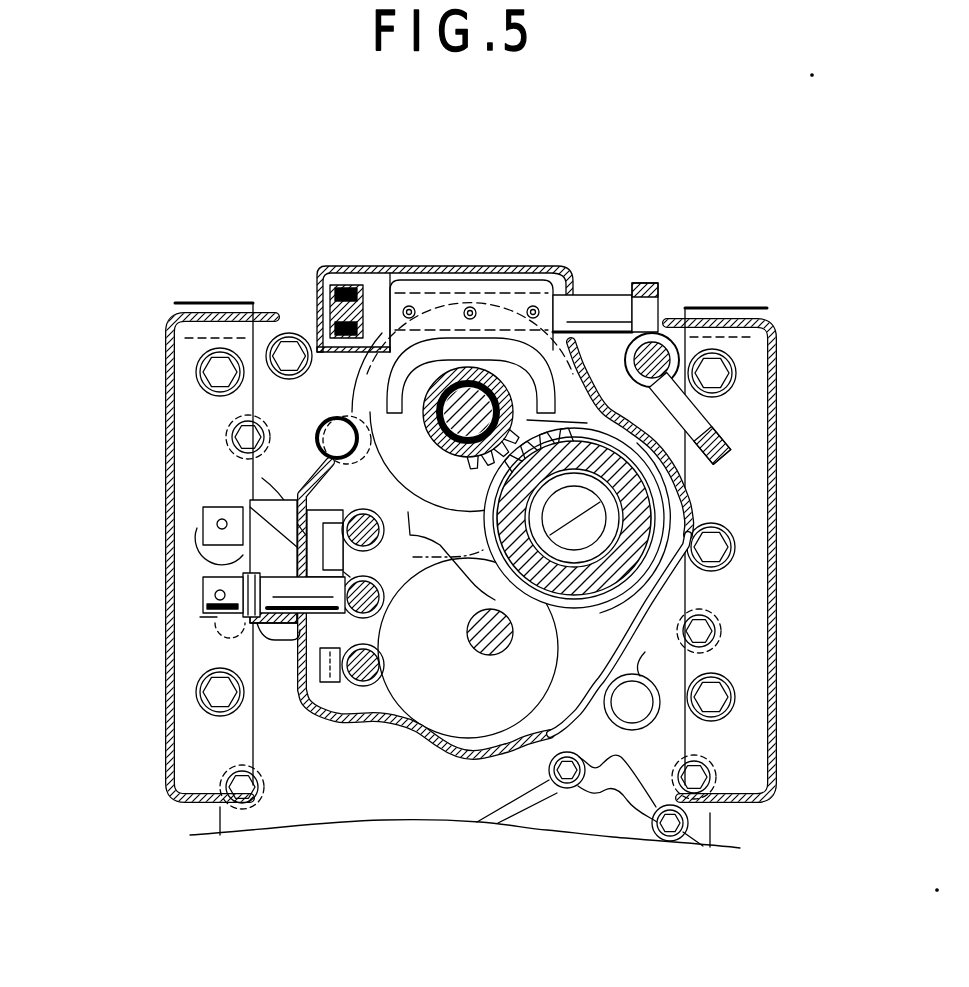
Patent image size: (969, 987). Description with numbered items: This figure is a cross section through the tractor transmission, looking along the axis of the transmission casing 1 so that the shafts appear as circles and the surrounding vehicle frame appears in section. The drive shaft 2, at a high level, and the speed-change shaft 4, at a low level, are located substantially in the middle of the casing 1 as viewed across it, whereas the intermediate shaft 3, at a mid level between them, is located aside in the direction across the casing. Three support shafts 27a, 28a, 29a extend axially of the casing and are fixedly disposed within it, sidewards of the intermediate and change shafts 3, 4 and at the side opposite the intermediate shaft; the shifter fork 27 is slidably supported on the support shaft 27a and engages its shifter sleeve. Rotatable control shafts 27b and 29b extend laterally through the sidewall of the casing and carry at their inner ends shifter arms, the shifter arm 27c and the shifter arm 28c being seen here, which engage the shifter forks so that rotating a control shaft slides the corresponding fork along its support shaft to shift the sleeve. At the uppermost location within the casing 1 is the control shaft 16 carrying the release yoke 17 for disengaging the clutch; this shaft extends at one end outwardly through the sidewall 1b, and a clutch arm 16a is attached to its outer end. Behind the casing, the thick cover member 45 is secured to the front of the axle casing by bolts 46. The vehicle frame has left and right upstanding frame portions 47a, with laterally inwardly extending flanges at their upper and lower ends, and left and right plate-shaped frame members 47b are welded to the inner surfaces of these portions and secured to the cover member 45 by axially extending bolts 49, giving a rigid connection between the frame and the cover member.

The transmission casing 1 is at (466, 760).
The sidewall 1b is at (622, 330).
The drive shaft 2 is at (458, 428).
The intermediate shaft 3 is at (577, 517).
The speed-change shaft 4 is at (493, 657).
The control shaft 16 is at (580, 305).
The clutch arm 16a is at (686, 350).
The release yoke 17 is at (401, 377).
The shifter fork 27 is at (518, 607).
The support shaft 27a is at (388, 535).
The control shaft 27b is at (300, 630).
The shifter arm 27c is at (250, 500).
The support shaft 28a is at (367, 687).
The shifter arm 28c is at (322, 683).
The support shaft 29a is at (413, 727).
The control shaft 29b is at (262, 478).
The cover member 45 is at (317, 812).
The bolts 46 is at (292, 333).
The upstanding frame portions 47a is at (168, 611).
The plate-shaped frame members 47b is at (197, 420).
The bolts 49 is at (213, 372).